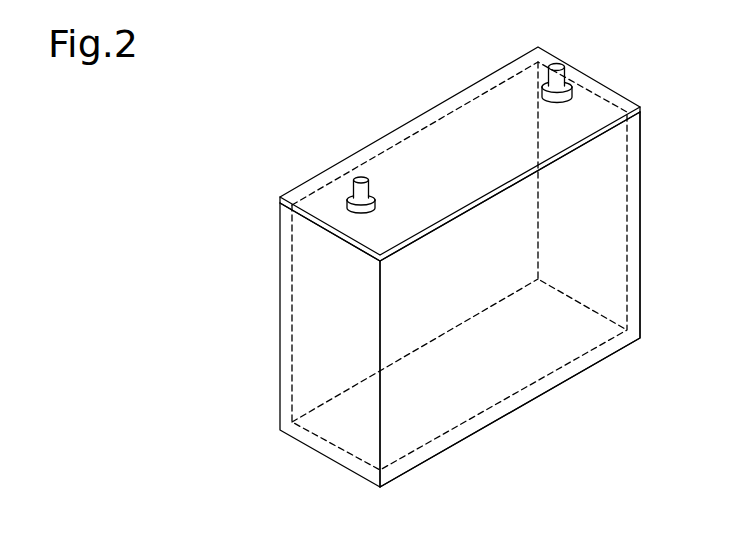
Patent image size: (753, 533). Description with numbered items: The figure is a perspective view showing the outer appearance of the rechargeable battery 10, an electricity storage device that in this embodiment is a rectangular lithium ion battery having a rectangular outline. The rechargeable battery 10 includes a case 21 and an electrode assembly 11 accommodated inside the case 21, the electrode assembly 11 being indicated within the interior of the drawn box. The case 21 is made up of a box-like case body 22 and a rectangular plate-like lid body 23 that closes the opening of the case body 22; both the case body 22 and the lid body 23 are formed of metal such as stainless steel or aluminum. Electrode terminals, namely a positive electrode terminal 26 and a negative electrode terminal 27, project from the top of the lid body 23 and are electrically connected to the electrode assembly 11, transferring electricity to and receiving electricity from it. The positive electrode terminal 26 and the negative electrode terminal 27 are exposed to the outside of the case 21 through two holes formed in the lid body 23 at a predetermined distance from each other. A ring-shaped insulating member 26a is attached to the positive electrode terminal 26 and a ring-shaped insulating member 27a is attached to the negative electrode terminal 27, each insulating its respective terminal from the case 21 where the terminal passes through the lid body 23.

The rechargeable battery 10 is at (434, 260).
The electrode assembly 11 is at (628, 258).
The case 21 is at (409, 267).
The case body 22 is at (279, 248).
The lid body 23 is at (223, 263).
The positive electrode terminal 26 is at (370, 187).
The insulating member 26a is at (376, 202).
The negative electrode terminal 27 is at (566, 73).
The insulating member 27a is at (542, 90).